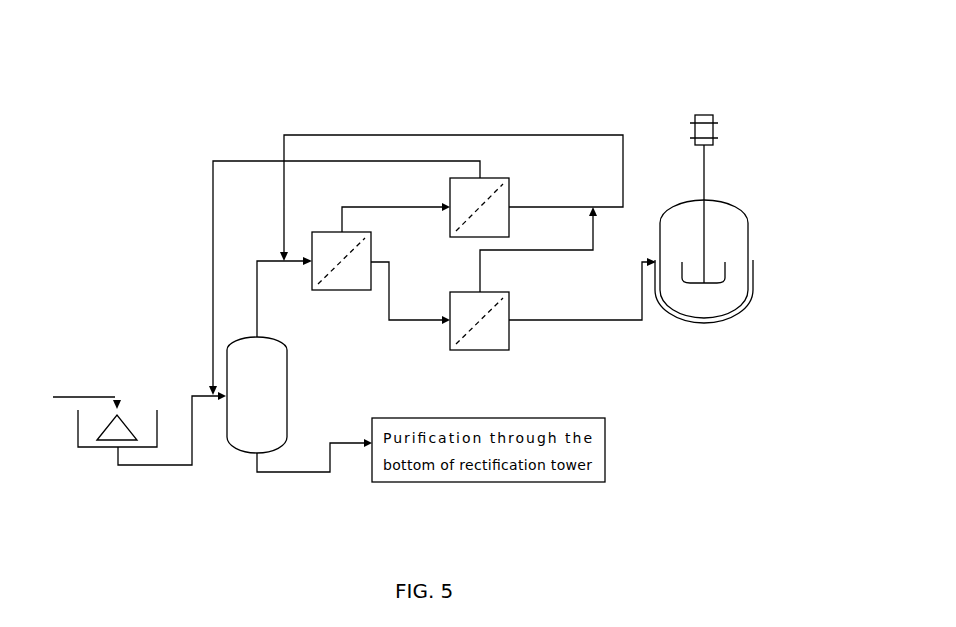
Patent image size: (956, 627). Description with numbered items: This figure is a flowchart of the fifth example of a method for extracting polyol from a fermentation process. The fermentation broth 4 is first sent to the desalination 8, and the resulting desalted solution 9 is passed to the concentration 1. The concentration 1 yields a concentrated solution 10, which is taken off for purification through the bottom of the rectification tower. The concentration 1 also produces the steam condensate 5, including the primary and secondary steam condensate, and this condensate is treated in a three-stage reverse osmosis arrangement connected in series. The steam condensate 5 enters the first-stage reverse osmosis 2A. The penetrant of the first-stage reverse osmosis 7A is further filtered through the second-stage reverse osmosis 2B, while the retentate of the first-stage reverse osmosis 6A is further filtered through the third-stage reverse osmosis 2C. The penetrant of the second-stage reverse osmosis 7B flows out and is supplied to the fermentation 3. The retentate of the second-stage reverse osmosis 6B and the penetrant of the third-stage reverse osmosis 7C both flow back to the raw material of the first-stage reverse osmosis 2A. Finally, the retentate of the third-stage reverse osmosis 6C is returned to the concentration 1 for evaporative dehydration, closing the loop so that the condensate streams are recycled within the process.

The concentration 1 is at (227, 440).
The first-stage reverse osmosis 2A is at (337, 290).
The second-stage reverse osmosis 2B is at (455, 350).
The third-stage reverse osmosis 2C is at (450, 226).
The fermentation 3 is at (737, 318).
The fermentation broth 4 is at (87, 387).
The steam condensate 5 is at (279, 297).
The retentate of the first-stage reverse osmosis 6A is at (396, 211).
The retentate of the second-stage reverse osmosis 6B is at (538, 249).
The retentate of the third-stage reverse osmosis 6C is at (359, 276).
The penetrant of the first-stage reverse osmosis 7A is at (410, 293).
The penetrant of the second-stage reverse osmosis 7B is at (582, 304).
The penetrant of the third-stage reverse osmosis 7C is at (451, 198).
The desalination 8 is at (78, 430).
The desalted solution 9 is at (172, 446).
The concentrated solution 10 is at (314, 467).